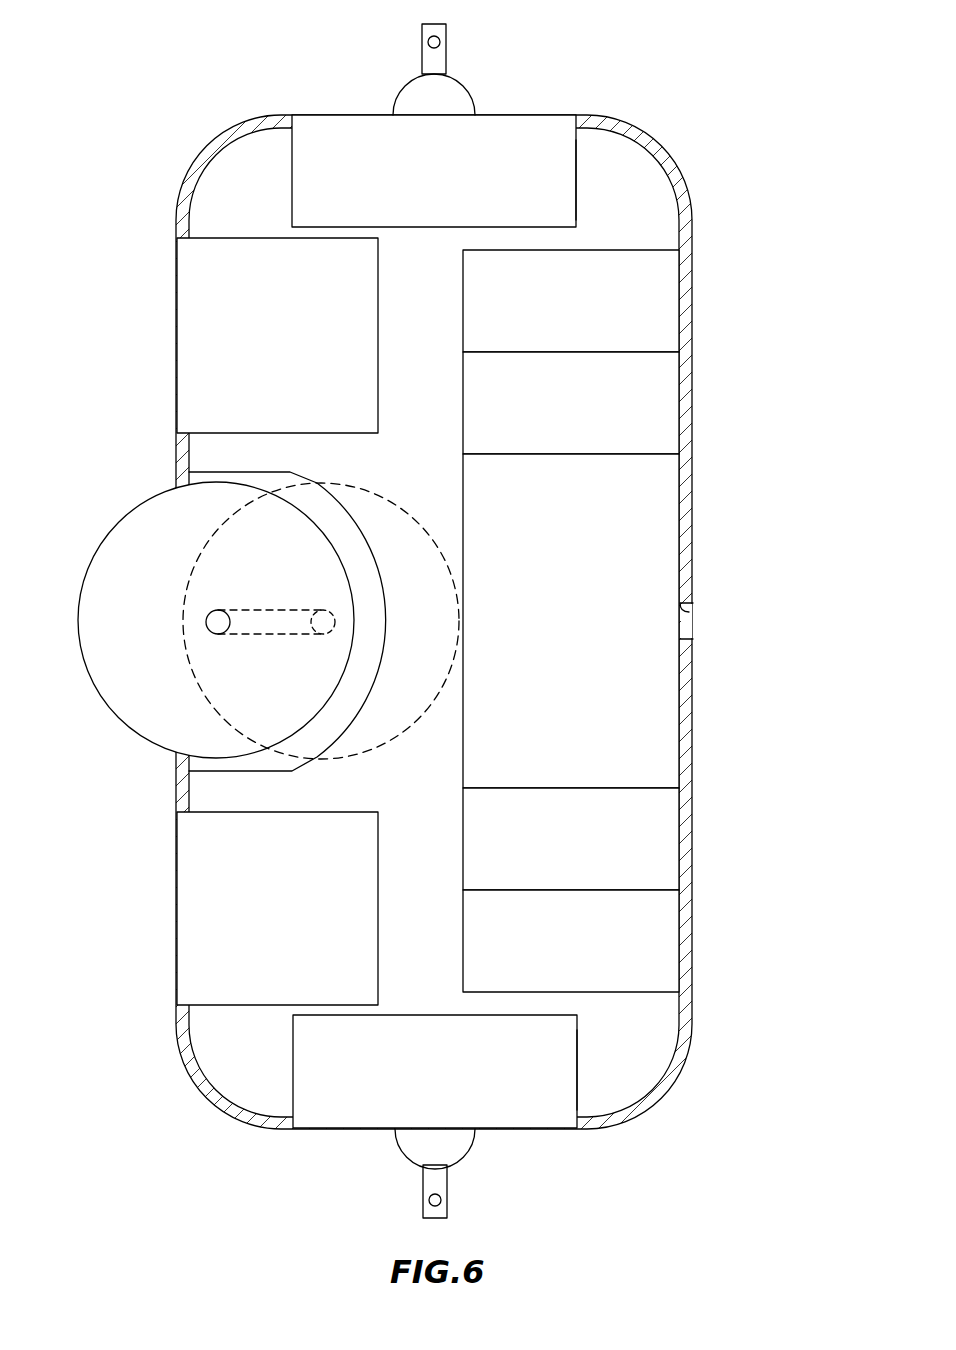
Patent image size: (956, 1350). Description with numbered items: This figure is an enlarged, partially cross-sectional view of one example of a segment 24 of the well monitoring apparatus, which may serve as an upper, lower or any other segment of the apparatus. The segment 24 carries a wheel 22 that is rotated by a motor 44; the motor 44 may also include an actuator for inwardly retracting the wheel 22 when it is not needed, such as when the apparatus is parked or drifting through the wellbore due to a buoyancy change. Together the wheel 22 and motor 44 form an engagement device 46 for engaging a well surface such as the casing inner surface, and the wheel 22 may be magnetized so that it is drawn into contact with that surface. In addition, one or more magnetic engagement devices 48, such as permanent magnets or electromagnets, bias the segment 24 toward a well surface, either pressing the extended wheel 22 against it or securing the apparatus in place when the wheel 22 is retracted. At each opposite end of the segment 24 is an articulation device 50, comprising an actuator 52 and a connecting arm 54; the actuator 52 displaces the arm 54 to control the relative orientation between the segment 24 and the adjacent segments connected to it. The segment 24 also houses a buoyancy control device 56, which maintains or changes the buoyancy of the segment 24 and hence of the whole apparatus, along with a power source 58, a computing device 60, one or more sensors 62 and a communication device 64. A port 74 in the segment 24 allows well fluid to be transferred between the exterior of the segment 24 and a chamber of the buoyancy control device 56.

The wheel 22 is at (105, 701).
The segment 24 is at (728, 127).
The motor 44 is at (350, 726).
The engagement device 46 is at (324, 473).
The magnetic engagement device 48 is at (177, 306).
The articulation device 50 is at (283, 174).
The actuator 52 is at (576, 187).
The connecting arm 54 is at (446, 58).
The buoyancy control device 56 is at (680, 651).
The power source 58 is at (680, 279).
The computing device 60 is at (680, 386).
The sensor 62 is at (680, 820).
The communication device 64 is at (680, 915).
The port 74 is at (690, 614).